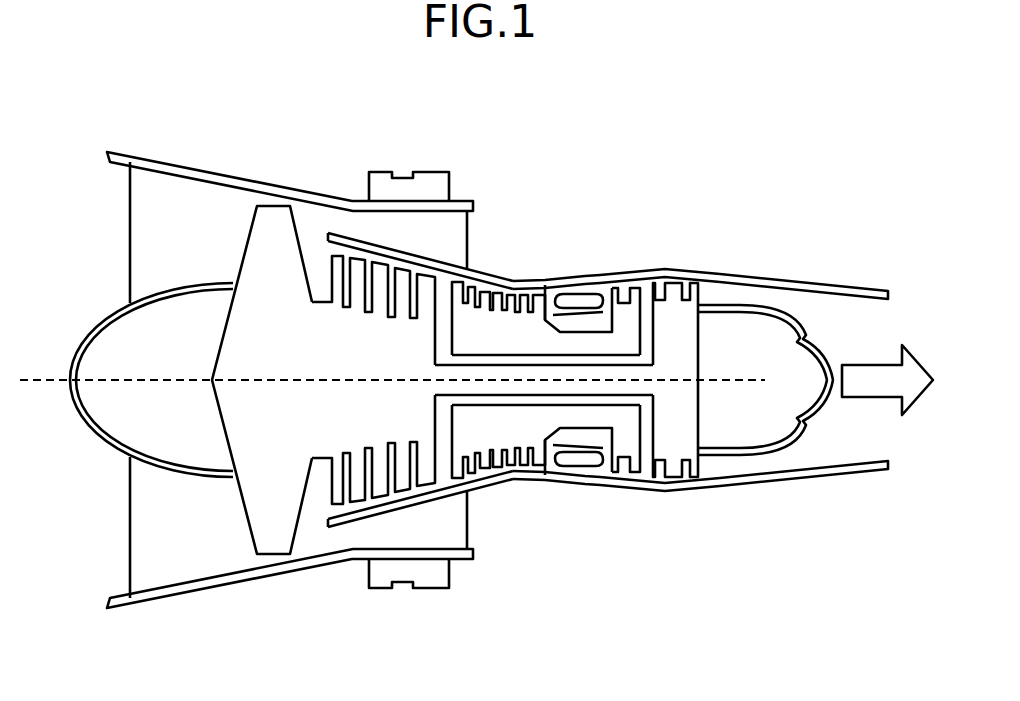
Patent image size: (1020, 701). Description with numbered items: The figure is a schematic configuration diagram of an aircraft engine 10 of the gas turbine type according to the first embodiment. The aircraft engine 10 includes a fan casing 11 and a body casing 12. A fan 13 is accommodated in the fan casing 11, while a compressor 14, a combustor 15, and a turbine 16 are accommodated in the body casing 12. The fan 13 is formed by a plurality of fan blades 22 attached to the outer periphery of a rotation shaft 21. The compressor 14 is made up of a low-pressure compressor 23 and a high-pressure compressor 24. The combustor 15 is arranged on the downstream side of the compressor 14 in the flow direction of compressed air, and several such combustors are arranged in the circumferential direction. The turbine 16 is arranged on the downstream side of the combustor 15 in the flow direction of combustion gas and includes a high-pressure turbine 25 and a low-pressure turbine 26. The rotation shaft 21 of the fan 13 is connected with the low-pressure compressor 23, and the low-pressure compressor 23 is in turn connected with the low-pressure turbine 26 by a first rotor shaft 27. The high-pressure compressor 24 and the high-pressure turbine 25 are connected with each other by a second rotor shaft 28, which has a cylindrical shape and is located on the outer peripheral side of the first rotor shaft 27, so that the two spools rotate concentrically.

The aircraft engine 10 is at (233, 135).
The fan casing 11 is at (163, 602).
The body casing 12 is at (830, 283).
The fan 13 is at (238, 263).
The compressor 14 is at (447, 240).
The combustor 15 is at (560, 273).
The turbine 16 is at (663, 262).
The rotation shaft 21 is at (243, 407).
The fan blades 22 is at (268, 220).
The low-pressure compressor 23 is at (365, 428).
The high-pressure compressor 24 is at (513, 423).
The high-pressure turbine 25 is at (620, 440).
The low-pressure turbine 26 is at (675, 432).
The first rotor shaft 27 is at (543, 388).
The second rotor shaft 28 is at (583, 417).